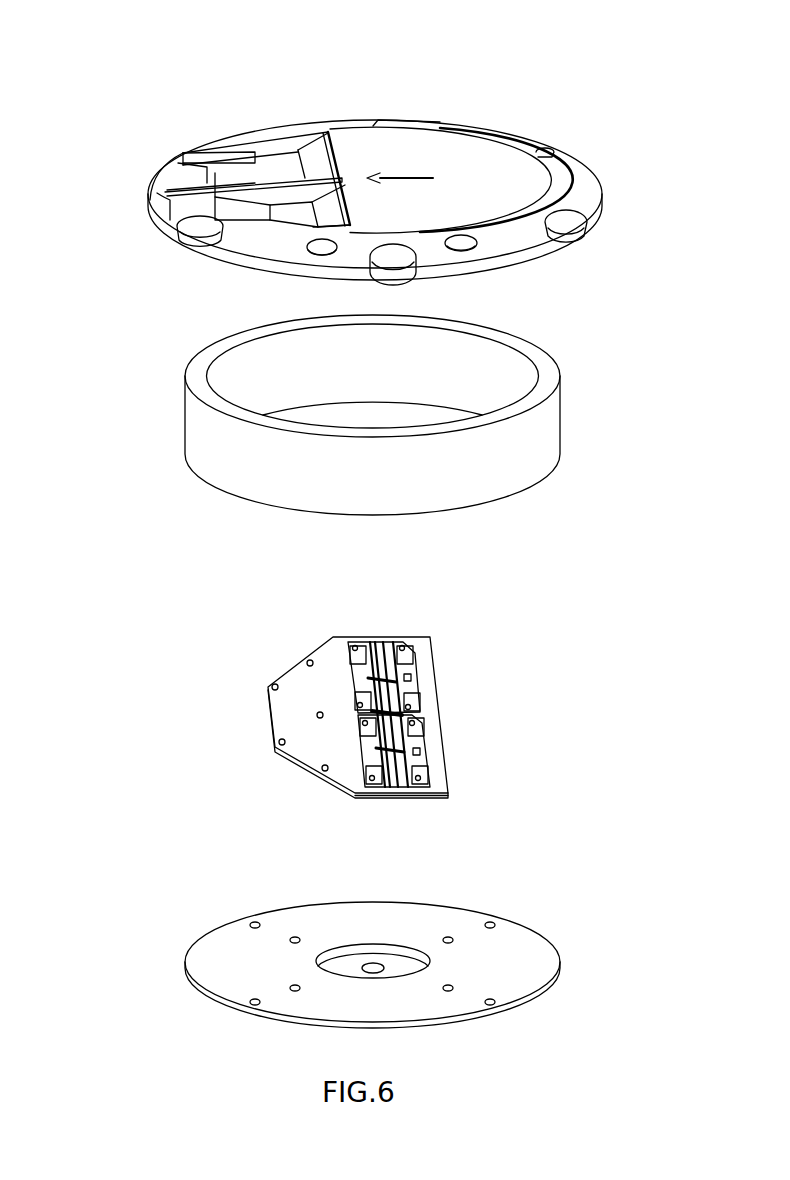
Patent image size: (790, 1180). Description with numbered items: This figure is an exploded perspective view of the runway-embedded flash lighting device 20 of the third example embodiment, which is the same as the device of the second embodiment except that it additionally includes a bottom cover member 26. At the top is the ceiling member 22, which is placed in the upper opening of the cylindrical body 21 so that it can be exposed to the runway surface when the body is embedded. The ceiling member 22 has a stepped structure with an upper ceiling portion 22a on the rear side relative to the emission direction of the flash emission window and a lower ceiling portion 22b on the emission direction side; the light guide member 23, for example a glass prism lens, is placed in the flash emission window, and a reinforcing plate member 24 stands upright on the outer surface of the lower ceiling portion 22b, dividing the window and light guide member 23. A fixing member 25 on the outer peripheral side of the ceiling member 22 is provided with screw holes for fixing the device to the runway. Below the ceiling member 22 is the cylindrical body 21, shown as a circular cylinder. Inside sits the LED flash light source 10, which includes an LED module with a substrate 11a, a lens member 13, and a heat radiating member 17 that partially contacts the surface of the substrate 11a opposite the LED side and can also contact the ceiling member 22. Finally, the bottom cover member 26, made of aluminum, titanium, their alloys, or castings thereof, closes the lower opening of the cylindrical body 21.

The runway-embedded flash lighting device 20 is at (373, 152).
The ceiling member 22 is at (578, 178).
The upper ceiling portion 22a is at (495, 133).
The lower ceiling portion 22b is at (272, 170).
The light guide member 23 is at (317, 160).
The reinforcing plate member 24 is at (257, 207).
The fixing member 25 is at (580, 217).
The cylindrical body 21 is at (548, 432).
The heat radiating member 17 is at (298, 688).
The LED flash light source 10 is at (425, 728).
The lens member 13 is at (388, 640).
The substrate 11a is at (390, 800).
The bottom cover member 26 is at (543, 962).